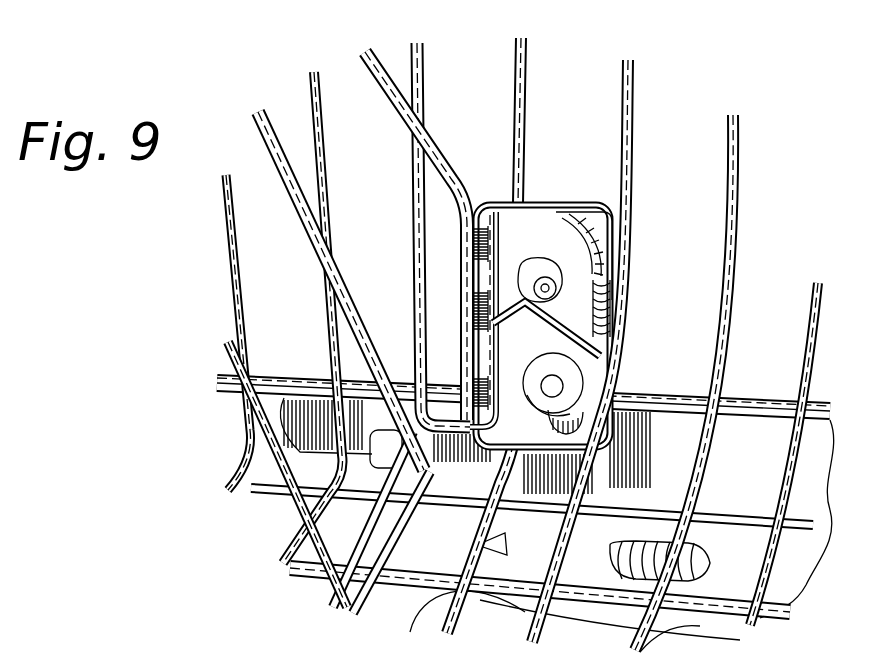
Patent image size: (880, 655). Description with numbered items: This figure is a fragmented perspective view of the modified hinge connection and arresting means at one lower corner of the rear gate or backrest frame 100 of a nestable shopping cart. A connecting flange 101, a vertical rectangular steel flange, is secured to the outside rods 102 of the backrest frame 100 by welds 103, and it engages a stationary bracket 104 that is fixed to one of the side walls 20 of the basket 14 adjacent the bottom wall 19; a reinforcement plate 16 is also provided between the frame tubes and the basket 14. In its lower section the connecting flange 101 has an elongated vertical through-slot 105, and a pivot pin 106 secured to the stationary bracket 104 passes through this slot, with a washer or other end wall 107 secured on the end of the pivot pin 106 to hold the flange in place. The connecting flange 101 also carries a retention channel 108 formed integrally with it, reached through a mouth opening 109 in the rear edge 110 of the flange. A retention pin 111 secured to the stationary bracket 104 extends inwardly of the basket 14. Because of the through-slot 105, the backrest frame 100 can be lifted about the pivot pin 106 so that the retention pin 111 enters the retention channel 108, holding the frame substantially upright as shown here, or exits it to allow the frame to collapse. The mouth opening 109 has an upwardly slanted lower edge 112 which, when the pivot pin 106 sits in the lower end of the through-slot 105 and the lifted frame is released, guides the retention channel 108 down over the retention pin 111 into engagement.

The basket 14 is at (794, 263).
The reinforcement plate 16 is at (752, 443).
The bottom wall 19 is at (778, 552).
The side walls 20 is at (530, 81).
The backrest frame 100 is at (382, 57).
The connecting flange 101 is at (490, 224).
The outside rods 102 is at (466, 270).
The welds 103 is at (472, 237).
The stationary bracket 104 is at (587, 212).
The vertical through-slot 105 is at (606, 412).
The pivot pin 106 is at (598, 372).
The end wall 107 is at (537, 402).
The retention channel 108 is at (540, 257).
The mouth opening 109 is at (582, 302).
The rear edge 110 is at (556, 386).
The retention pin 111 is at (527, 300).
The upwardly slanted lower edge 112 is at (592, 318).